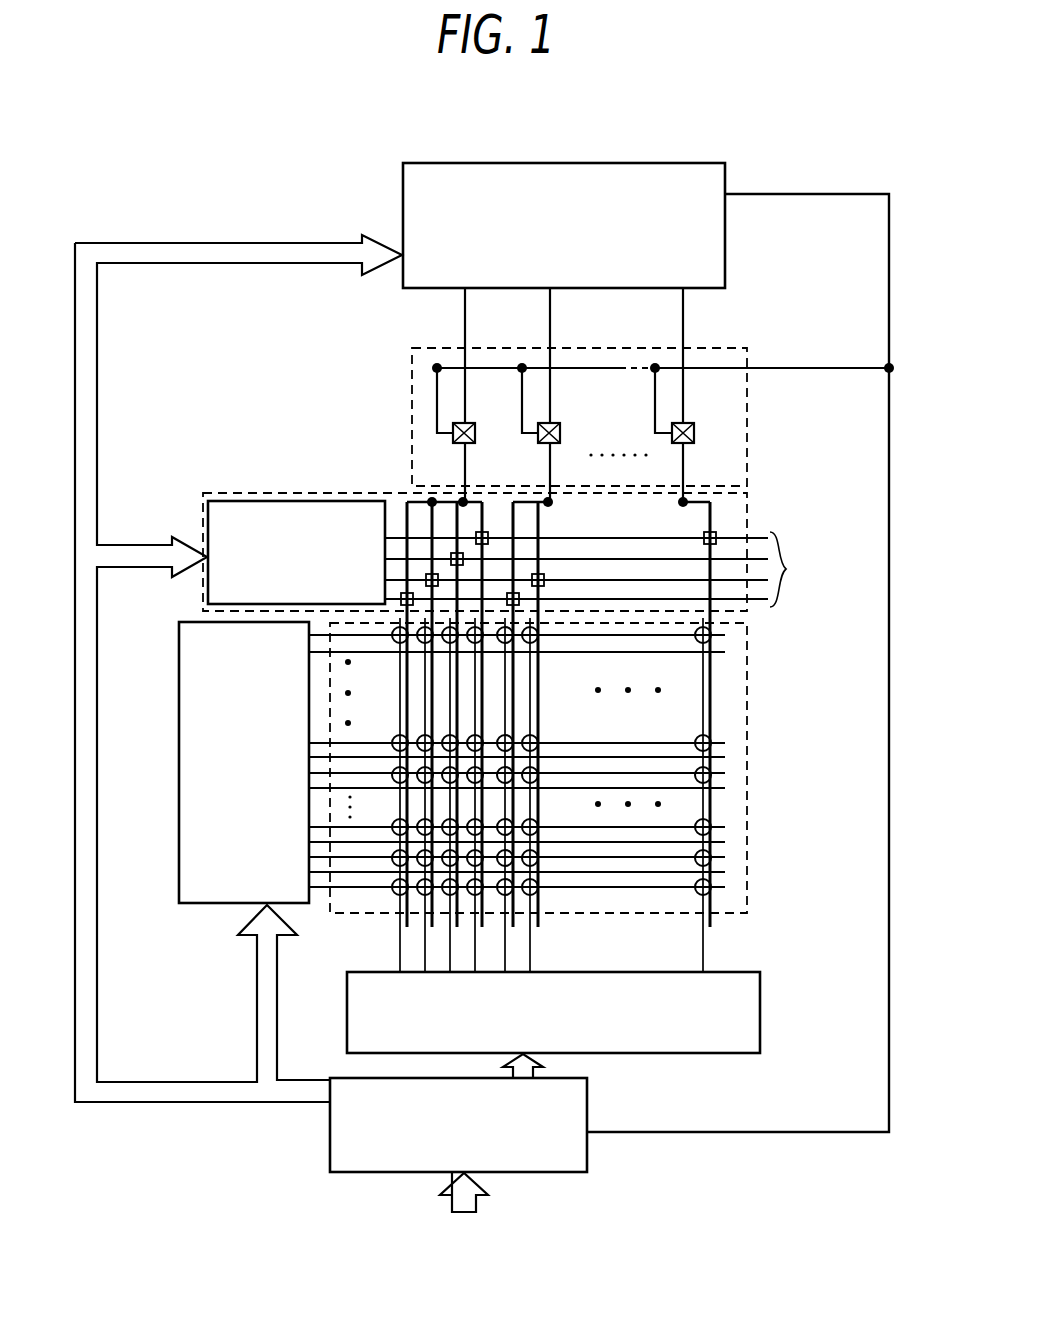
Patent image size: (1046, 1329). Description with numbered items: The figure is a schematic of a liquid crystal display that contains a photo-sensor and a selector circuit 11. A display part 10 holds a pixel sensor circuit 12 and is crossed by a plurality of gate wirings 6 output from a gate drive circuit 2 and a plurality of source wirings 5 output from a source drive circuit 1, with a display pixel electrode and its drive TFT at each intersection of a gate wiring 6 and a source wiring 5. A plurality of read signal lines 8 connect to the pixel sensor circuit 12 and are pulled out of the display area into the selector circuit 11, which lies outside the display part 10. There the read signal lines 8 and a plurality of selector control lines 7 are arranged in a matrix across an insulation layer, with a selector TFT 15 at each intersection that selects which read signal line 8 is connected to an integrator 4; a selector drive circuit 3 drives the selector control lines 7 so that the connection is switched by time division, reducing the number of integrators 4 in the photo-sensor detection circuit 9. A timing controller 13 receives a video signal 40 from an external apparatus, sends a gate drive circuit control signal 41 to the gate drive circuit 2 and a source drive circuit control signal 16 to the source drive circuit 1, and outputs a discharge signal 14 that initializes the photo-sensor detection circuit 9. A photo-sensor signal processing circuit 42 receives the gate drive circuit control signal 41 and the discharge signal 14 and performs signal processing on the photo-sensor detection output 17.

The source drive circuit 1 is at (760, 1012).
The gate drive circuit 2 is at (178, 772).
The selector drive circuit 3 is at (240, 493).
The integrator 4 is at (694, 430).
The source wiring 5 is at (709, 950).
The gate wiring 6 is at (348, 913).
The selector control line 7 is at (596, 569).
The read signal line 8 is at (712, 803).
The photo-sensor detection circuit 9 is at (747, 348).
The display part 10 is at (747, 637).
The selector circuit 11 is at (747, 503).
The pixel sensor circuit 12 is at (716, 643).
The timing controller 13 is at (587, 1152).
The discharge signal 14 is at (889, 1110).
The selector TFT 15 is at (452, 553).
The source drive circuit control signal 16 is at (547, 1065).
The photo-sensor detection output 17 is at (683, 317).
The video signal 40 is at (480, 1203).
The gate drive circuit control signal 41 is at (97, 1018).
The photo-sensor signal processing circuit 42 is at (726, 168).